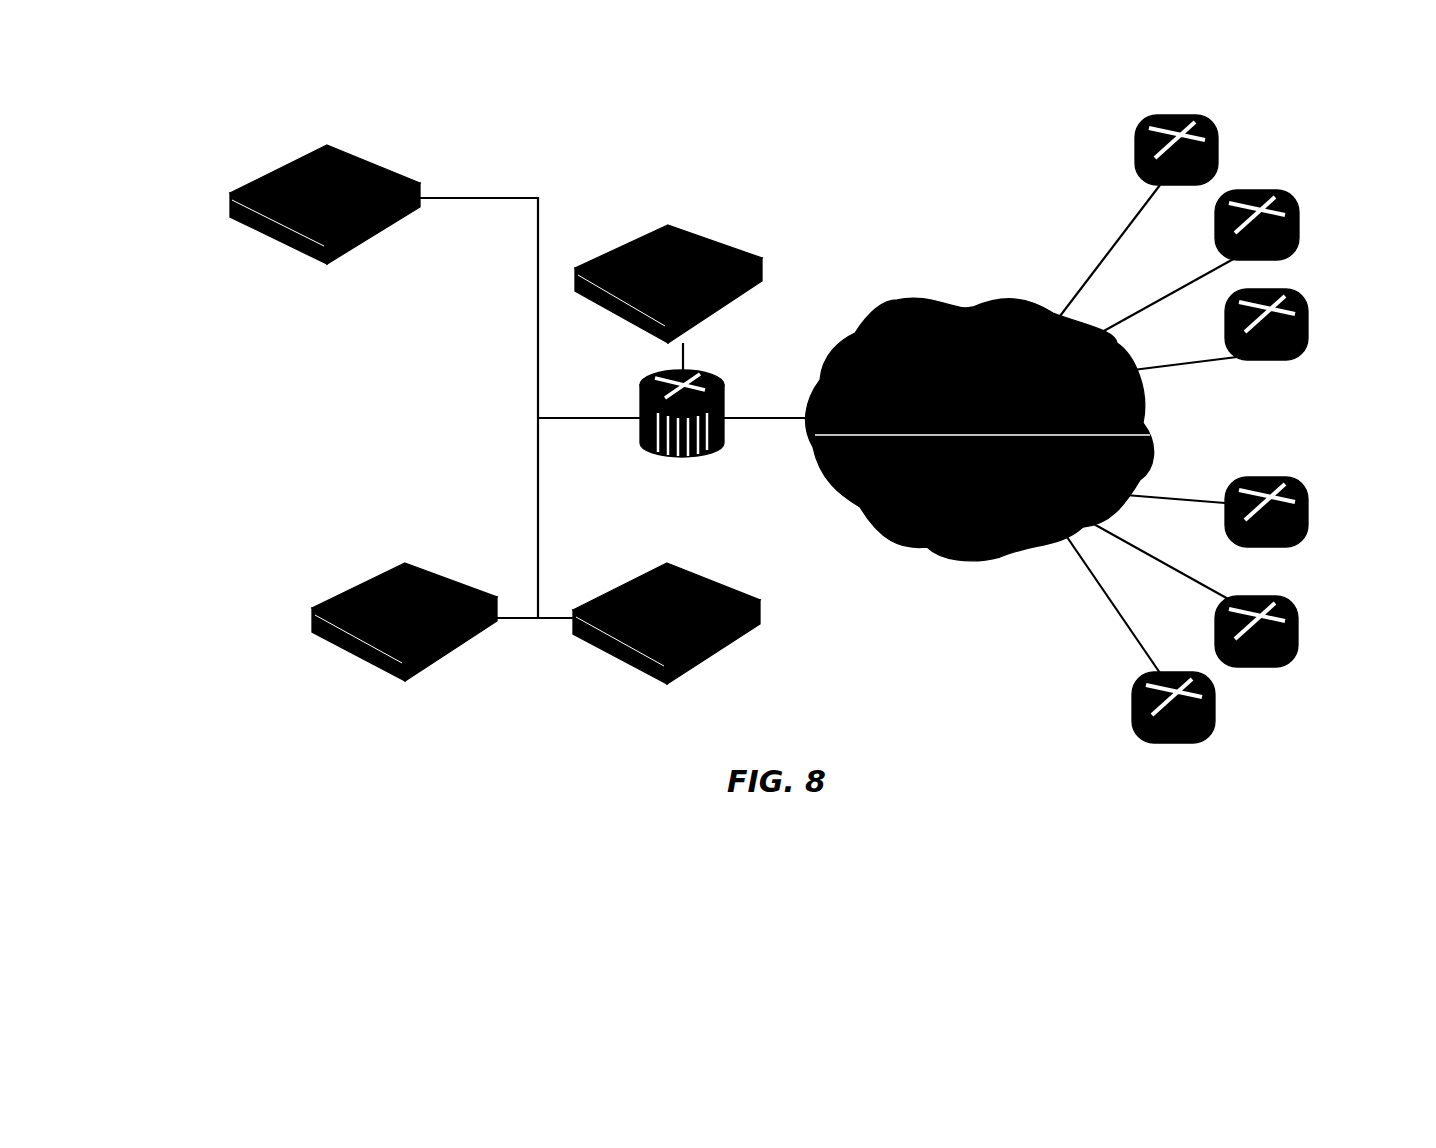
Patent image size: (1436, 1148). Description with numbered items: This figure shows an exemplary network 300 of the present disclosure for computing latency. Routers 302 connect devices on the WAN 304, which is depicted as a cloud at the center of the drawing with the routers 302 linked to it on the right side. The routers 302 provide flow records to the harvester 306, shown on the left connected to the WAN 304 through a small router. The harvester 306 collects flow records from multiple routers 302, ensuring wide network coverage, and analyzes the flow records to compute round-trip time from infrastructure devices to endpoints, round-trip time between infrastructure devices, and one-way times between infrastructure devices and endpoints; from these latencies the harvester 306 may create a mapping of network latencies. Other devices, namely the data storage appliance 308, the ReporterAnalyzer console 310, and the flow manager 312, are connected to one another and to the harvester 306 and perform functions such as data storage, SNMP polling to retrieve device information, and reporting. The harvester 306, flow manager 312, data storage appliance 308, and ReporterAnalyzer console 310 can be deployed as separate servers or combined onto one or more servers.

The network 300 is at (966, 808).
The routers 302 is at (1317, 337).
The WAN 304 is at (975, 268).
The harvester 306 is at (758, 287).
The data storage appliance 308 is at (752, 617).
The ReporterAnalyzer console 310 is at (330, 603).
The flow manager 312 is at (265, 223).